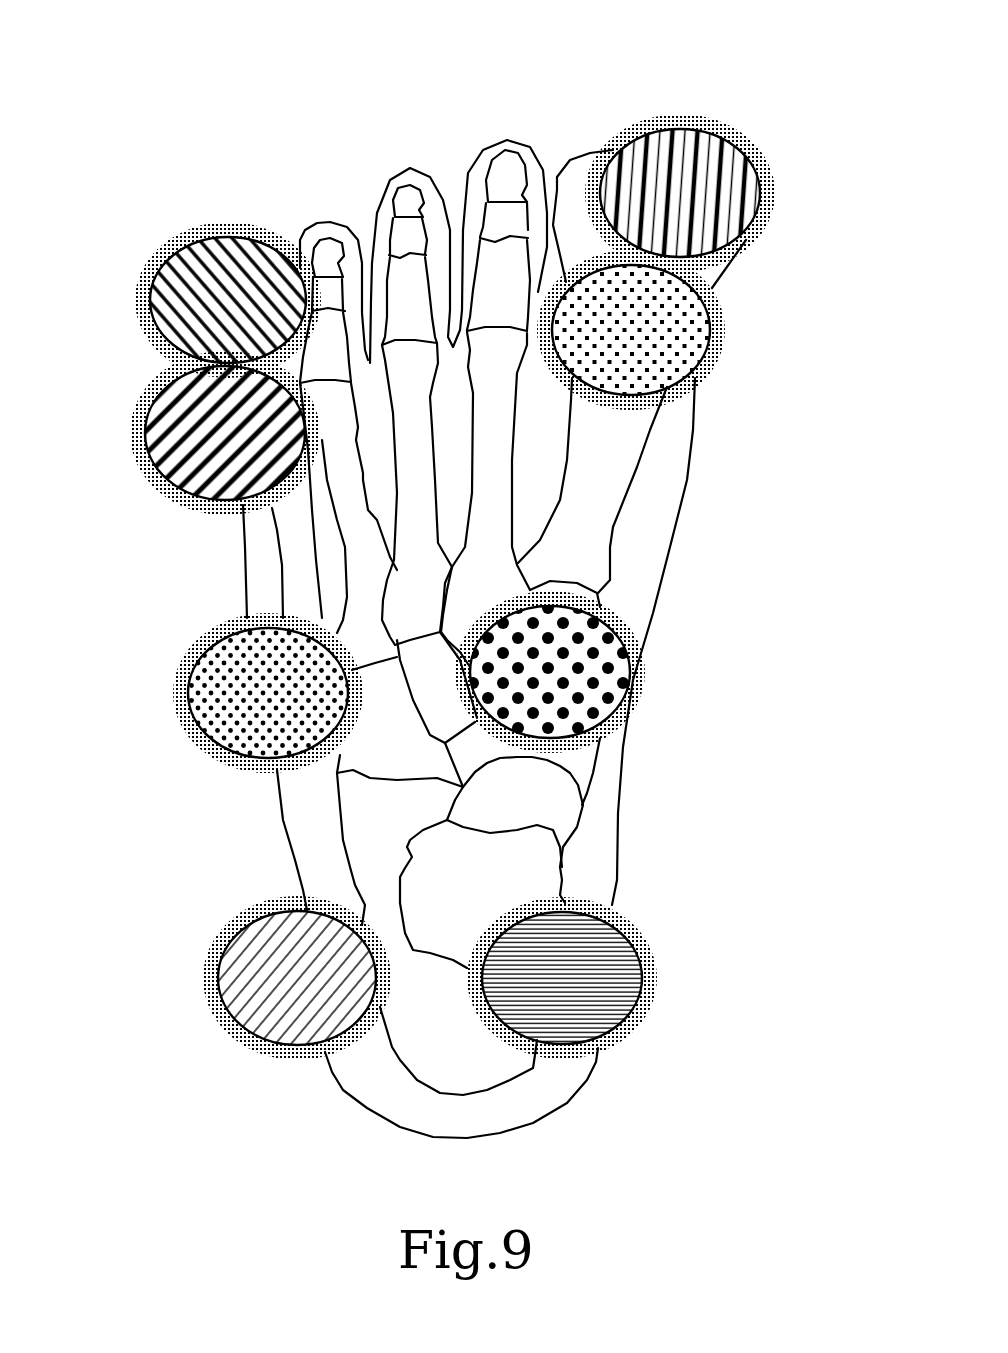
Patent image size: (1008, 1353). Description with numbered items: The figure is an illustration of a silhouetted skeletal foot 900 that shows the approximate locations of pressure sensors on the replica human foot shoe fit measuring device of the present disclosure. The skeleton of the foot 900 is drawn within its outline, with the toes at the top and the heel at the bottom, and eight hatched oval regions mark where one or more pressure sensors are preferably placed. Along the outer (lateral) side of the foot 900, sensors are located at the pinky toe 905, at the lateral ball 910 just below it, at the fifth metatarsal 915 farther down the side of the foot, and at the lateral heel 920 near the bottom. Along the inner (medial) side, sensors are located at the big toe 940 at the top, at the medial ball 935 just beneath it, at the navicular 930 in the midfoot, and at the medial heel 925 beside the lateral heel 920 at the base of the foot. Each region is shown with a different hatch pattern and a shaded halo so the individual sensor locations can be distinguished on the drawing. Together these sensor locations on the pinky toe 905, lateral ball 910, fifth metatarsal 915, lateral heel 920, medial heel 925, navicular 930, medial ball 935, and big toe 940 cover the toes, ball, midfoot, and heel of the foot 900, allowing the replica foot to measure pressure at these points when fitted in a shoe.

The foot 900 is at (216, 119).
The pinky toe 905 is at (180, 290).
The lateral ball 910 is at (170, 433).
The fifth metatarsal 915 is at (213, 693).
The lateral heel 920 is at (242, 976).
The medial heel 925 is at (615, 966).
The navicular 930 is at (611, 672).
The medial ball 935 is at (695, 330).
The big toe 940 is at (744, 167).